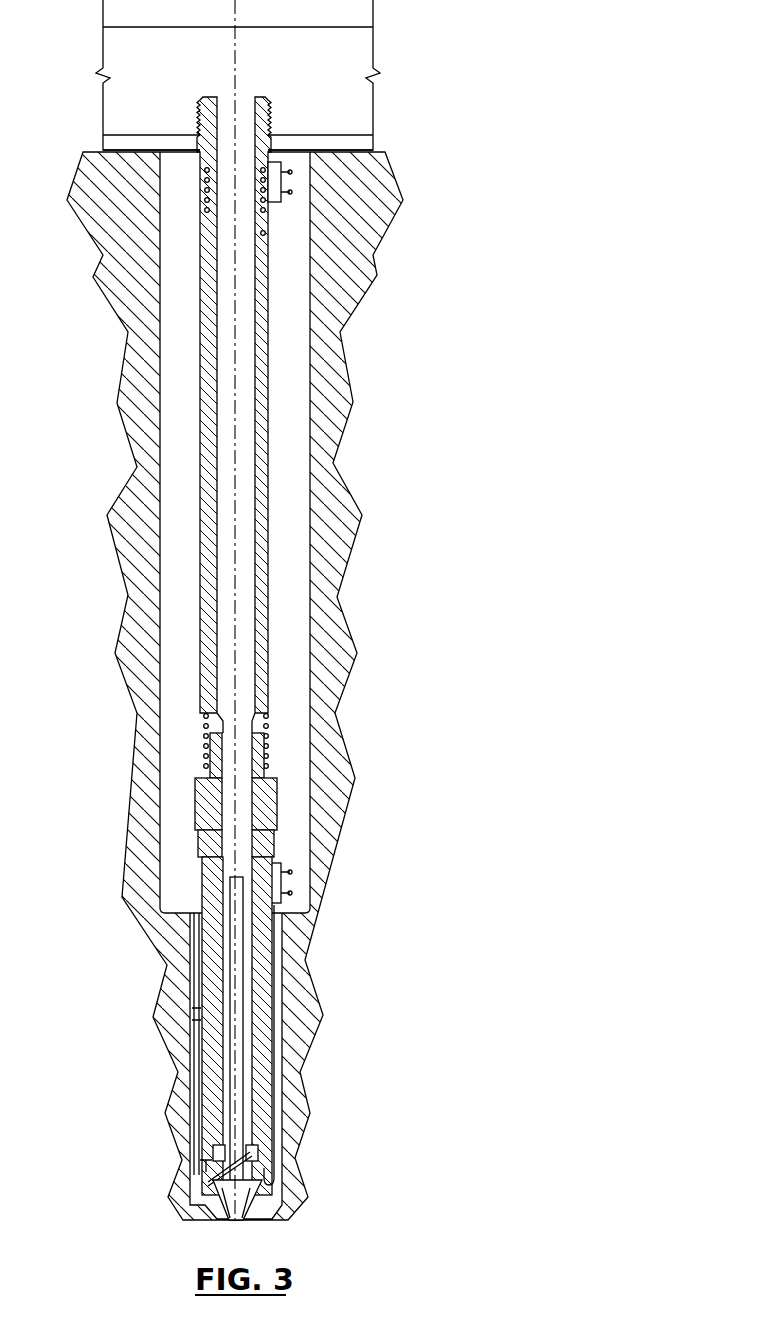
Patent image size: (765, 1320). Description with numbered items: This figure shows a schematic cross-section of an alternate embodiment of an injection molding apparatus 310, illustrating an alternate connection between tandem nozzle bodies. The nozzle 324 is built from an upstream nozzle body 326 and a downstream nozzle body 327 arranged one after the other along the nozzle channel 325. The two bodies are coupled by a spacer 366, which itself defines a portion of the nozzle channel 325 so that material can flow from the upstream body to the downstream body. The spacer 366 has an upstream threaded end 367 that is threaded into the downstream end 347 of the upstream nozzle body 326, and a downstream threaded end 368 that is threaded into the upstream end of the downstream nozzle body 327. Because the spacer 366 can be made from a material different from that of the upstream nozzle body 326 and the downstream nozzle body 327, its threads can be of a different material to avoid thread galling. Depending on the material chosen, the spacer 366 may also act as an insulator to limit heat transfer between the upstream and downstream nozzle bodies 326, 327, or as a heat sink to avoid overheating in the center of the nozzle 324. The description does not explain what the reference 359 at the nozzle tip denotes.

The injection molding apparatus 310 is at (422, 141).
The nozzle 324 is at (292, 545).
The nozzle channel 325 is at (230, 768).
The upstream nozzle body 326 is at (212, 406).
The downstream nozzle body 327 is at (207, 1010).
The downstream end 347 is at (208, 722).
The nozzle tip 359 is at (237, 1221).
The spacer 366 is at (276, 787).
The upstream threaded end 367 is at (270, 742).
The downstream threaded end 368 is at (273, 823).